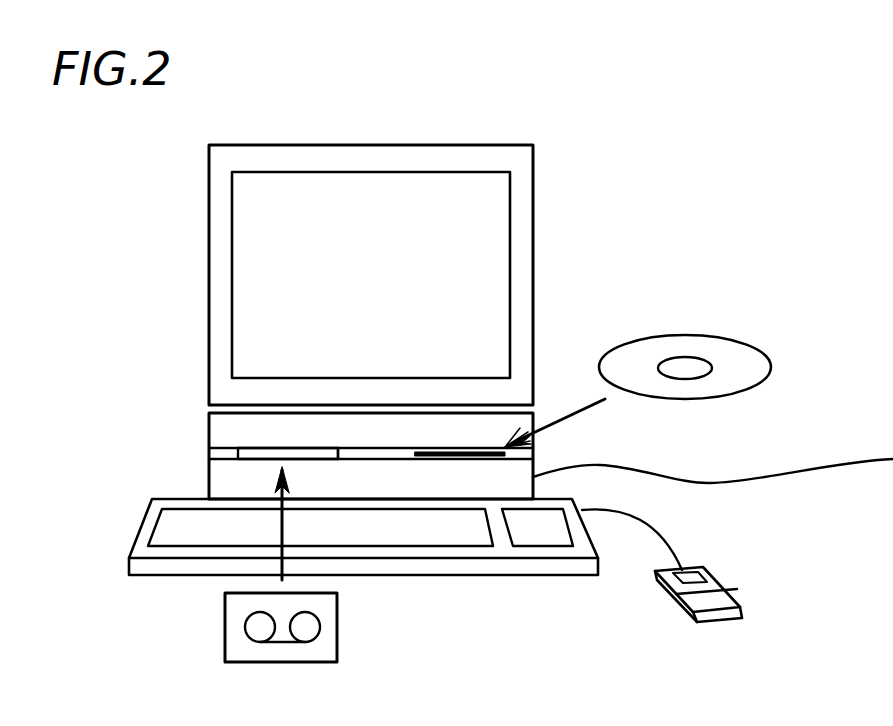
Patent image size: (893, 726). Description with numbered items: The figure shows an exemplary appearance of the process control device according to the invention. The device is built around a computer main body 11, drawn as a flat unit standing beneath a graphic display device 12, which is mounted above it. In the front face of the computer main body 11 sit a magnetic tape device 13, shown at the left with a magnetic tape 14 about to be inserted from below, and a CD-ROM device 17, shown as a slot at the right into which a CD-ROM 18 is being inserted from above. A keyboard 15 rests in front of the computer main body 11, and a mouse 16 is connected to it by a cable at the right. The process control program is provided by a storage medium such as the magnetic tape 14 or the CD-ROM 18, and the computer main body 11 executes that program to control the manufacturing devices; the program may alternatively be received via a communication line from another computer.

The computer main body 11 is at (209, 428).
The graphic display device 12 is at (209, 253).
The magnetic tape device 13 is at (253, 453).
The magnetic tape 14 is at (225, 627).
The keyboard 15 is at (482, 576).
The mouse 16 is at (743, 600).
The CD-ROM device 17 is at (443, 459).
The CD-ROM 18 is at (752, 364).